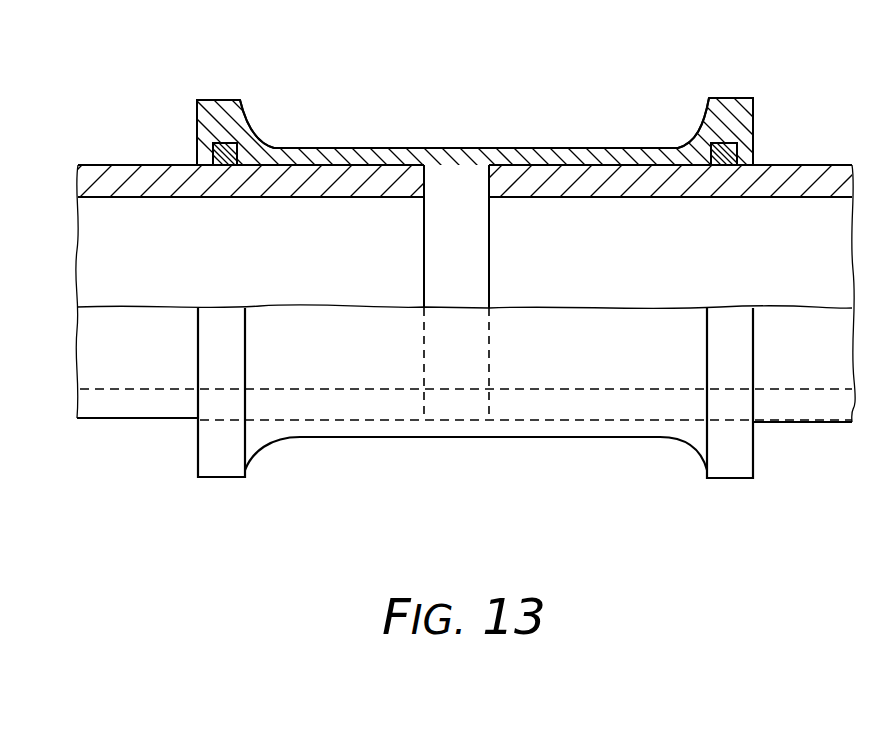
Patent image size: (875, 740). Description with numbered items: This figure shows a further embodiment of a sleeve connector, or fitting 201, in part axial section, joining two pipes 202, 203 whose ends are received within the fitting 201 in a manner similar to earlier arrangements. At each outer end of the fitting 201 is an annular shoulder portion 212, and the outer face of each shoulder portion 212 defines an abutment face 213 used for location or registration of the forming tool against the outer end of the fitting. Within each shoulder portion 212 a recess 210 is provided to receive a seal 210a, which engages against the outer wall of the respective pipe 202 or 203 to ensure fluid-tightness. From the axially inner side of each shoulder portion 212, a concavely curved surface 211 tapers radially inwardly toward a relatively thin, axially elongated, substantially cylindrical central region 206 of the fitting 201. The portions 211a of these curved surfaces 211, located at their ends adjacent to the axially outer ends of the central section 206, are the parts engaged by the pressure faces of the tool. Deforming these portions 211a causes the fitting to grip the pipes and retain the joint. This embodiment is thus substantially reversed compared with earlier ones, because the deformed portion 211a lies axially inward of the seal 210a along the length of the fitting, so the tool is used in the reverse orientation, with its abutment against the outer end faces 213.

The fitting 201 is at (458, 137).
The pipe 202 is at (363, 188).
The pipe 203 is at (620, 187).
The central region of the fitting 206 is at (488, 160).
The recess 210 is at (240, 148).
The seal 210a is at (227, 167).
The concavely curved surface 211 is at (250, 136).
The portion of curved surface 211a is at (270, 147).
The shoulder portion 212 is at (220, 110).
The abutment face 213 is at (196, 130).